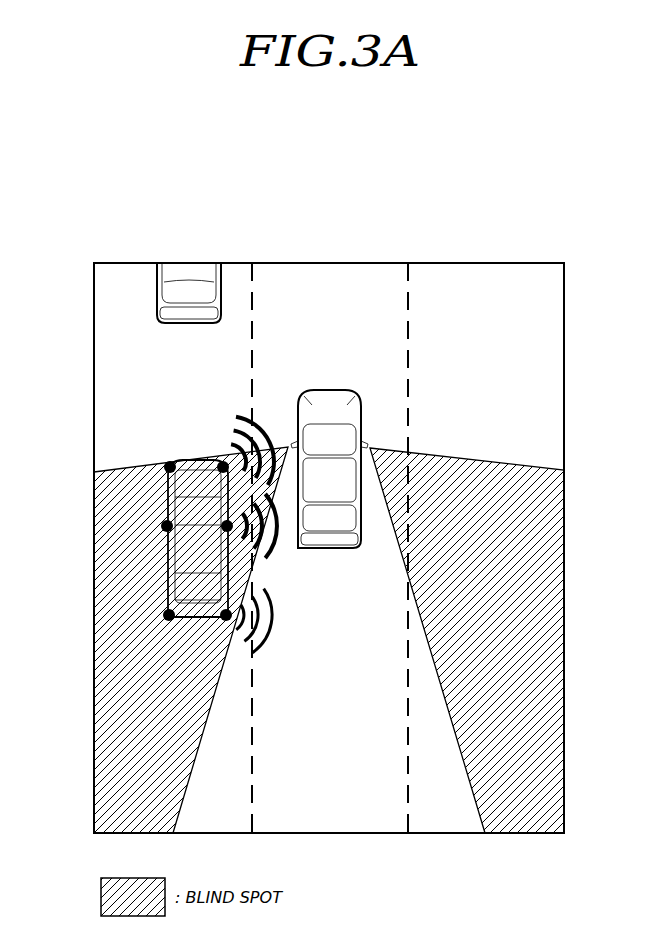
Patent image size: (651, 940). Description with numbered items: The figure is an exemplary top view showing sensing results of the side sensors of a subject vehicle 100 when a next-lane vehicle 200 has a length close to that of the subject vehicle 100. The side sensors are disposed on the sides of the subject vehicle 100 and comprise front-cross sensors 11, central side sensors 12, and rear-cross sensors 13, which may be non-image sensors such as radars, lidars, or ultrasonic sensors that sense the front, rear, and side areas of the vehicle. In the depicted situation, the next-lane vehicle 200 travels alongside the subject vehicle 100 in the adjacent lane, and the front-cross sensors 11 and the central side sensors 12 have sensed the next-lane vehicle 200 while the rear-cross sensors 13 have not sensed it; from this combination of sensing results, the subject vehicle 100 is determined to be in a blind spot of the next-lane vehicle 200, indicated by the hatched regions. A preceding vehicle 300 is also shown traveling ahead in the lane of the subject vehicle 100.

The subject vehicle 100 is at (167, 573).
The next-lane vehicle 200 is at (330, 390).
The preceding vehicle 300 is at (157, 280).
The front-cross sensors 11 is at (222, 461).
The central side sensors 12 is at (250, 547).
The rear-cross sensors 13 is at (238, 617).